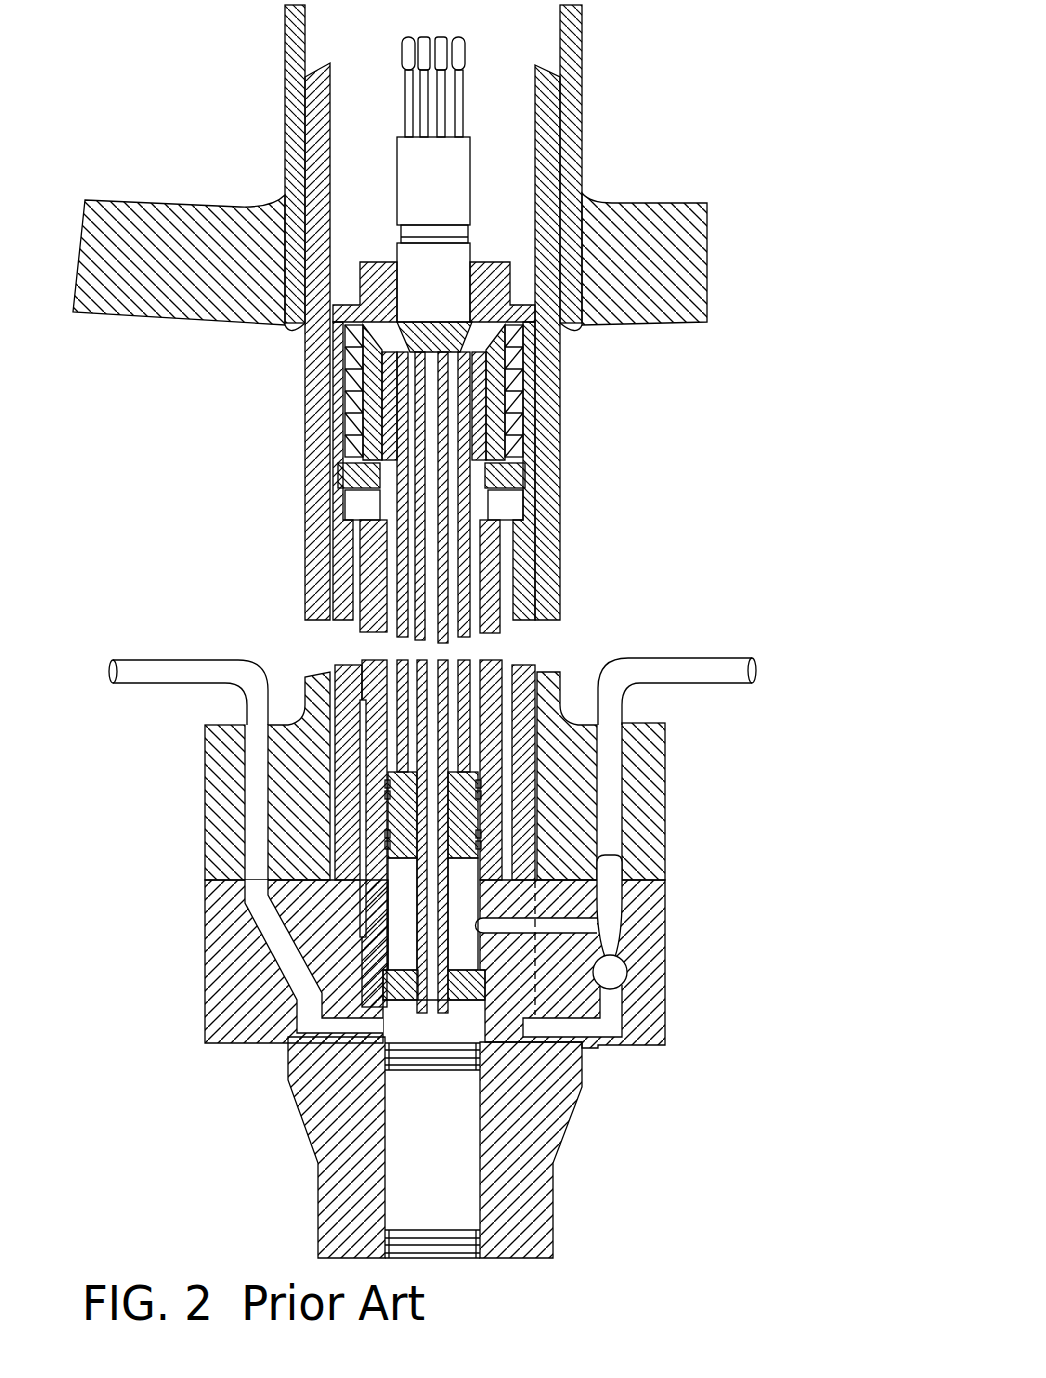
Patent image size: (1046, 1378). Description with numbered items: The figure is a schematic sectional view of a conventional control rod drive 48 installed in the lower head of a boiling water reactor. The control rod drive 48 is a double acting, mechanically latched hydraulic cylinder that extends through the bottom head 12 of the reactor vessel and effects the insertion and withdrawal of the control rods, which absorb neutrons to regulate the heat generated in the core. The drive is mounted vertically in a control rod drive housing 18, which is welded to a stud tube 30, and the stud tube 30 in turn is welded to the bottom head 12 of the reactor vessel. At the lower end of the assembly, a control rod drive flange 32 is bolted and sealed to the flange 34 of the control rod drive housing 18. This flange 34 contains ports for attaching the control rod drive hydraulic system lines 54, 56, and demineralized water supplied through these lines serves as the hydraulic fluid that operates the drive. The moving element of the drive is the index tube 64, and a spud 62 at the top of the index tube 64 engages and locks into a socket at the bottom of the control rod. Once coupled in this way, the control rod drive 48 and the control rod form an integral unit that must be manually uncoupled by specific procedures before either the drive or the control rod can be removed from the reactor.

The bottom head 12 is at (181, 203).
The stud tube 30 is at (582, 150).
The spud 62 is at (462, 52).
The control rod drive housing 18 is at (318, 578).
The index tube 64 is at (553, 592).
The control rod drive 48 is at (666, 520).
The control rod drive hydraulic system line 56 is at (168, 660).
The control rod drive hydraulic system line 54 is at (703, 660).
The flange of the control rod drive housing 34 is at (668, 845).
The control rod drive flange 32 is at (668, 1040).